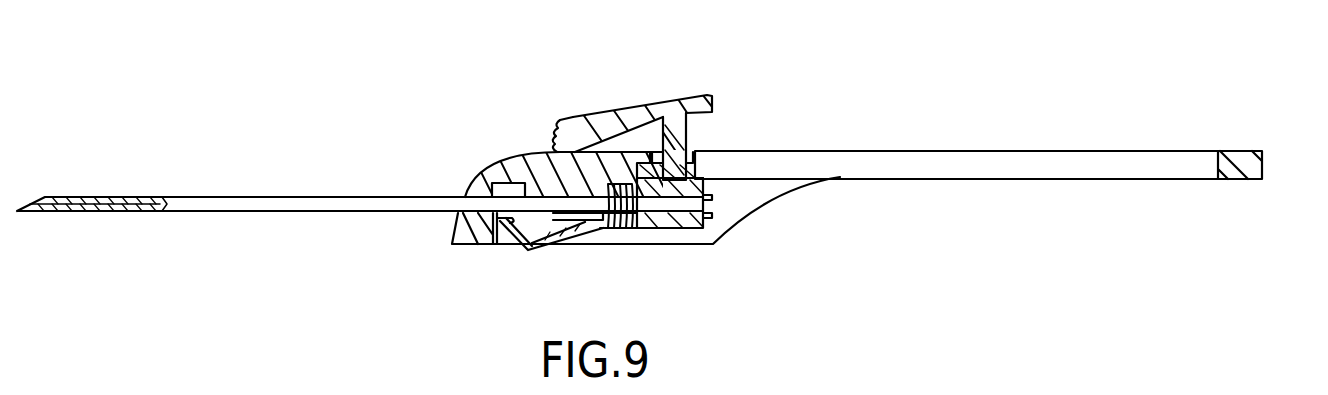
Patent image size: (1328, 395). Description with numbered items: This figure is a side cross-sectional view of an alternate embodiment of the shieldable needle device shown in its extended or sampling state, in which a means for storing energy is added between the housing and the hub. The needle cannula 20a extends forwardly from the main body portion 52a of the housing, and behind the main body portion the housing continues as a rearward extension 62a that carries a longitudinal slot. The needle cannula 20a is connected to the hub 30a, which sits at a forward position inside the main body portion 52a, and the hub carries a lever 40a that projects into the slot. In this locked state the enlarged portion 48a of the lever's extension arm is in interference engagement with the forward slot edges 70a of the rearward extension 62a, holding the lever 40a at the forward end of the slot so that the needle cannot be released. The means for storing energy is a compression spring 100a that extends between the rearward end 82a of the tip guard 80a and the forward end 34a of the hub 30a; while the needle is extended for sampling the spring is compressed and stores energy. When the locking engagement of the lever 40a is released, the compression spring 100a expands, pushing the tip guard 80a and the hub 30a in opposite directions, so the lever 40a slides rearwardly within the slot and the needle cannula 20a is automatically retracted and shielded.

The needle cannula 20a is at (283, 197).
The main body portion 52a is at (515, 177).
The lever 40a is at (643, 110).
The forward slot edges 70a is at (687, 150).
The rearward extension 62a is at (1235, 152).
The hub 30a is at (705, 223).
The enlarged portion 48a is at (700, 183).
The forward end of hub 34a is at (655, 228).
The compression spring 100a is at (633, 228).
The tip guard 80a is at (572, 248).
The rearward end of tip guard 82a is at (610, 228).